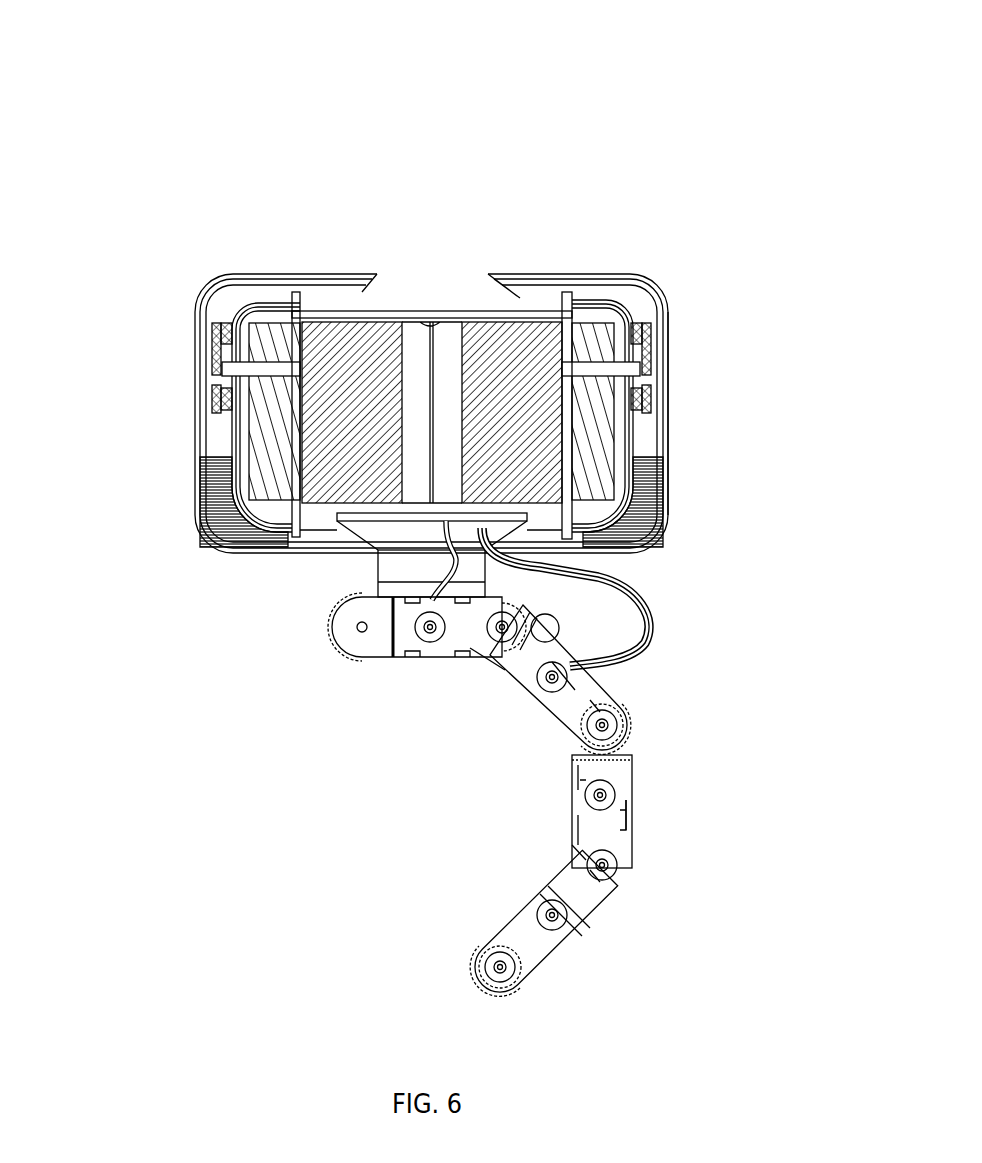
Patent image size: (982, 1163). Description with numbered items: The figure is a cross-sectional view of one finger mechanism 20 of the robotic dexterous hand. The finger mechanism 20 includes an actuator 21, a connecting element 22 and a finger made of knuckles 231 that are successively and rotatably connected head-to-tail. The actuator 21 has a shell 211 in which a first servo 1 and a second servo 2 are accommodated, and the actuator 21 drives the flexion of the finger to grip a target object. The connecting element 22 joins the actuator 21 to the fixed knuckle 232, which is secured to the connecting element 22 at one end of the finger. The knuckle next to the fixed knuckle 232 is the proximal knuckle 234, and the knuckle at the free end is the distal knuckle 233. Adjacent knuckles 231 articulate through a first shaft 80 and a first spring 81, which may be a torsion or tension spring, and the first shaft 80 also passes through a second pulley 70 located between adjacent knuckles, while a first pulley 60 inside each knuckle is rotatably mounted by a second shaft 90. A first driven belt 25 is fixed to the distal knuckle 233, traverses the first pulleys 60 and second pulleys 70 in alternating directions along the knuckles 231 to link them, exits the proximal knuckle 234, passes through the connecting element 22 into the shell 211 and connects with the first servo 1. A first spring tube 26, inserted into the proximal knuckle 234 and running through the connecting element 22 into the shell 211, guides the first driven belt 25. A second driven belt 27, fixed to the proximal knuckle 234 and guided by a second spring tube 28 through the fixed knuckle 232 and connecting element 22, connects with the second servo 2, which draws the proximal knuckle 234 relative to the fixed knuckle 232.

The finger mechanism 20 is at (478, 50).
The actuator 21 is at (161, 418).
The shell 211 is at (668, 441).
The second servo 2 is at (340, 367).
The first servo 1 is at (518, 355).
The second spring tube 28 is at (423, 533).
The connecting element 22 is at (400, 570).
The first spring tube 26 is at (605, 578).
The fixed knuckle 232 is at (350, 648).
The first driven belt 25 is at (600, 680).
The proximal knuckle 234 is at (545, 700).
The second driven belt 27 is at (477, 677).
The knuckle 231 is at (570, 822).
The distal knuckle 233 is at (485, 938).
The first pulley 60 is at (428, 640).
The second pulley 70 is at (490, 652).
The first spring 81 is at (615, 703).
The second shaft 90 is at (622, 760).
The first shaft 80 is at (627, 857).